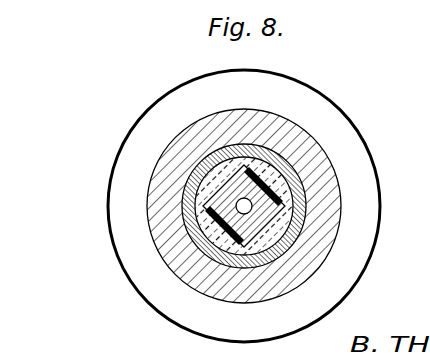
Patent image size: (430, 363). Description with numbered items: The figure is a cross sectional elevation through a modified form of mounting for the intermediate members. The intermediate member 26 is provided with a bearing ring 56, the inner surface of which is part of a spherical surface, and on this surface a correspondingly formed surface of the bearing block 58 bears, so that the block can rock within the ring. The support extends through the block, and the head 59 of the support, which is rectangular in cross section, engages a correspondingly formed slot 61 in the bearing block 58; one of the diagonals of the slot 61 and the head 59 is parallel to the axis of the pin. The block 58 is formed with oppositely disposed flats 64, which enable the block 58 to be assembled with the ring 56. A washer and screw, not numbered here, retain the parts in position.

The intermediate member 26 is at (357, 163).
The bearing ring 56 is at (269, 144).
The bearing block 58 is at (322, 144).
The head of the support 59 is at (190, 273).
The slot 61 is at (181, 249).
The flats 64 is at (298, 209).